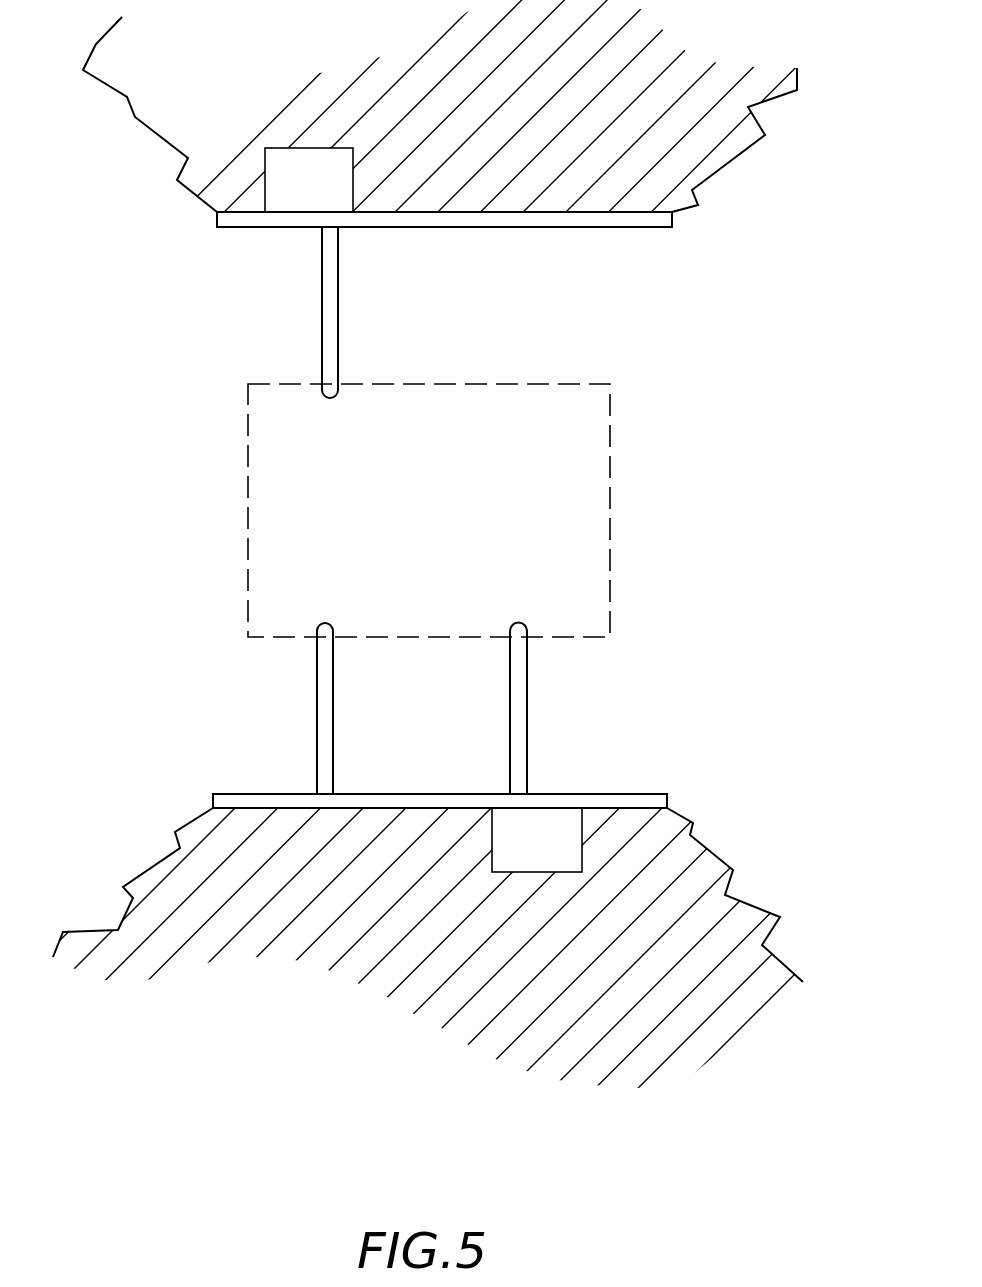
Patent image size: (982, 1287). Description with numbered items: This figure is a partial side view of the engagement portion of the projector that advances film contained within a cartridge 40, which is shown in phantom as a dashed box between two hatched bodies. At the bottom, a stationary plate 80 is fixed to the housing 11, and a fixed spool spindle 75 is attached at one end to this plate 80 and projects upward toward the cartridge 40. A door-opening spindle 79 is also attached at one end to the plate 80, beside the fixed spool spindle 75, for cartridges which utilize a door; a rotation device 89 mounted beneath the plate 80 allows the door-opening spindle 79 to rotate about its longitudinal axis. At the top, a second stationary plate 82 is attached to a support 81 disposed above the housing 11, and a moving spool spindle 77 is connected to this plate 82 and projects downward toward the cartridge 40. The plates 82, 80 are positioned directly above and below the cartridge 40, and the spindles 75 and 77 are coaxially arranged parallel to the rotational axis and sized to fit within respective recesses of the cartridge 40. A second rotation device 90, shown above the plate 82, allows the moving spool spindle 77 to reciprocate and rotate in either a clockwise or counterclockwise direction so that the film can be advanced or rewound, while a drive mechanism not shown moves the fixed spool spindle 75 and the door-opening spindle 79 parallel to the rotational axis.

The housing 11 is at (727, 862).
The support 81 is at (708, 145).
The stationary plate 82 is at (498, 222).
The stationary plate 80 is at (427, 795).
The second rotation device 90 is at (305, 195).
The rotation device 89 is at (545, 822).
The moving spool spindle 77 is at (325, 336).
The fixed spool spindle 75 is at (327, 738).
The door-opening spindle 79 is at (520, 712).
The cartridge 40 is at (617, 467).